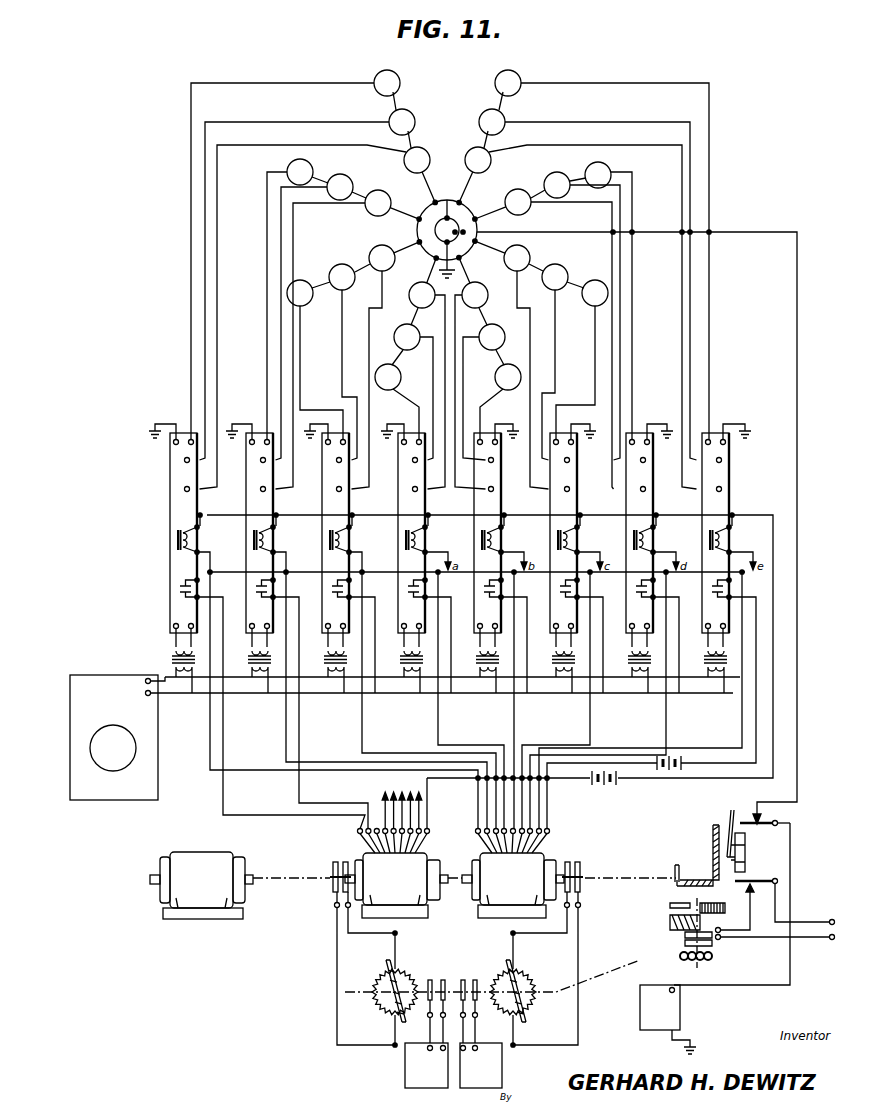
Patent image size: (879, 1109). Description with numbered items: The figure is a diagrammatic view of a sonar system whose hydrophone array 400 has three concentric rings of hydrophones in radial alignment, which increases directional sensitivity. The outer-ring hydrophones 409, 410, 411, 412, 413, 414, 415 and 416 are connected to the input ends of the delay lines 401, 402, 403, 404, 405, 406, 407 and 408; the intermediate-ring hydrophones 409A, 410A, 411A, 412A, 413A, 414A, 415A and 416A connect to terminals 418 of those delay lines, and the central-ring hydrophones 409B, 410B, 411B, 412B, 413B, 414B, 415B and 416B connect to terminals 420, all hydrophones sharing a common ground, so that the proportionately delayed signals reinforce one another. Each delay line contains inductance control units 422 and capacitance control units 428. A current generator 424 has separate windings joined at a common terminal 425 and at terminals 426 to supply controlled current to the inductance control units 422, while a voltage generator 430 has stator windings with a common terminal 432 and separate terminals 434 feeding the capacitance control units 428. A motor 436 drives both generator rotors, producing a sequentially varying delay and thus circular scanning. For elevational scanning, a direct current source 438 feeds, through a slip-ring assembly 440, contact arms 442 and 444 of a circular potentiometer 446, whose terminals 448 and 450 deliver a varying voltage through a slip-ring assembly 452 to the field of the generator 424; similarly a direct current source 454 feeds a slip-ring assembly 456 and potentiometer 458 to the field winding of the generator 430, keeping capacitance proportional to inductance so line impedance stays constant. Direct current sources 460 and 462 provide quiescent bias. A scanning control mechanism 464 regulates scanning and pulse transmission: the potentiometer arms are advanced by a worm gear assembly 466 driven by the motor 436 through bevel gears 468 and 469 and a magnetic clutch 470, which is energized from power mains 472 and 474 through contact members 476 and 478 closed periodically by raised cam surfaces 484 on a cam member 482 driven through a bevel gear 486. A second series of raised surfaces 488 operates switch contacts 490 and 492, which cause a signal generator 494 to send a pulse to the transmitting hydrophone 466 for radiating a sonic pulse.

The hydrophone array 400 is at (376, 68).
The delay line 401 is at (170, 504).
The delay line 402 is at (246, 504).
The delay line 403 is at (322, 504).
The delay line 404 is at (398, 504).
The delay line 405 is at (474, 500).
The delay line 406 is at (550, 500).
The delay line 407 is at (626, 500).
The delay line 408 is at (702, 500).
The outer ring hydrophone 409 is at (398, 78).
The intermediate ring hydrophone 409A is at (411, 112).
The central ring hydrophone 409B is at (428, 144).
The outer ring hydrophone 410 is at (290, 166).
The intermediate ring hydrophone 410A is at (350, 174).
The central ring hydrophone 410B is at (386, 193).
The outer ring hydrophone 411 is at (306, 304).
The intermediate ring hydrophone 411A is at (336, 265).
The central ring hydrophone 411B is at (372, 250).
The outer ring hydrophone 412 is at (384, 388).
The intermediate ring hydrophone 412A is at (398, 333).
The central ring hydrophone 412B is at (420, 278).
The outer ring hydrophone 413 is at (503, 388).
The intermediate ring hydrophone 413A is at (497, 325).
The central ring hydrophone 413B is at (473, 283).
The outer ring hydrophone 414 is at (588, 306).
The intermediate ring hydrophone 414A is at (563, 268).
The central ring hydrophone 414B is at (525, 249).
The outer ring hydrophone 415 is at (606, 166).
The intermediate ring hydrophone 415A is at (553, 172).
The central ring hydrophone 415B is at (506, 194).
The outer ring hydrophone 416 is at (521, 76).
The intermediate ring hydrophone 416A is at (503, 114).
The central ring hydrophone 416B is at (488, 170).
The delay line terminal 418 is at (733, 460).
The delay line terminal 420 is at (733, 489).
The inductance control unit 422 is at (712, 542).
The current generator 424 is at (405, 876).
The common terminal 425 is at (429, 831).
The terminals 426 is at (352, 836).
The capacitance control unit 428 is at (712, 590).
The voltage generator 430 is at (522, 876).
The common terminal 432 is at (550, 831).
The terminals 434 is at (474, 848).
The motor 436 is at (200, 852).
The direct current source 438 is at (405, 1066).
The slip-ring assembly 440 is at (436, 976).
The contact arm 442 is at (388, 959).
The contact arm 444 is at (400, 1020).
The circular potentiometer 446 is at (412, 952).
The potentiometer terminal 448 is at (395, 940).
The potentiometer terminal 450 is at (393, 1044).
The slip-ring assembly 452 is at (330, 895).
The direct current source 454 is at (502, 1069).
The slip-ring assembly 456 is at (464, 976).
The potentiometer 458 is at (527, 962).
The direct current source 460 is at (668, 756).
The direct current source 462 is at (608, 786).
The scanning control mechanism 464 is at (796, 868).
The transmitting hydrophone / worm gear assembly 466 is at (447, 200).
The bevel gear 468 is at (676, 866).
The bevel gear 469 is at (680, 885).
The magnetic clutch 470 is at (670, 918).
The power main 472 is at (806, 922).
The power main 474 is at (805, 938).
The contact member 476 is at (745, 880).
The contact member 478 is at (748, 893).
The cam member 482 is at (746, 853).
The raised cam surfaces 484 is at (731, 809).
The bevel gear 486 is at (713, 824).
The raised surfaces 488 is at (746, 842).
The switch contact 490 is at (757, 808).
The switch contact 492 is at (758, 822).
The signal generator 494 is at (656, 984).